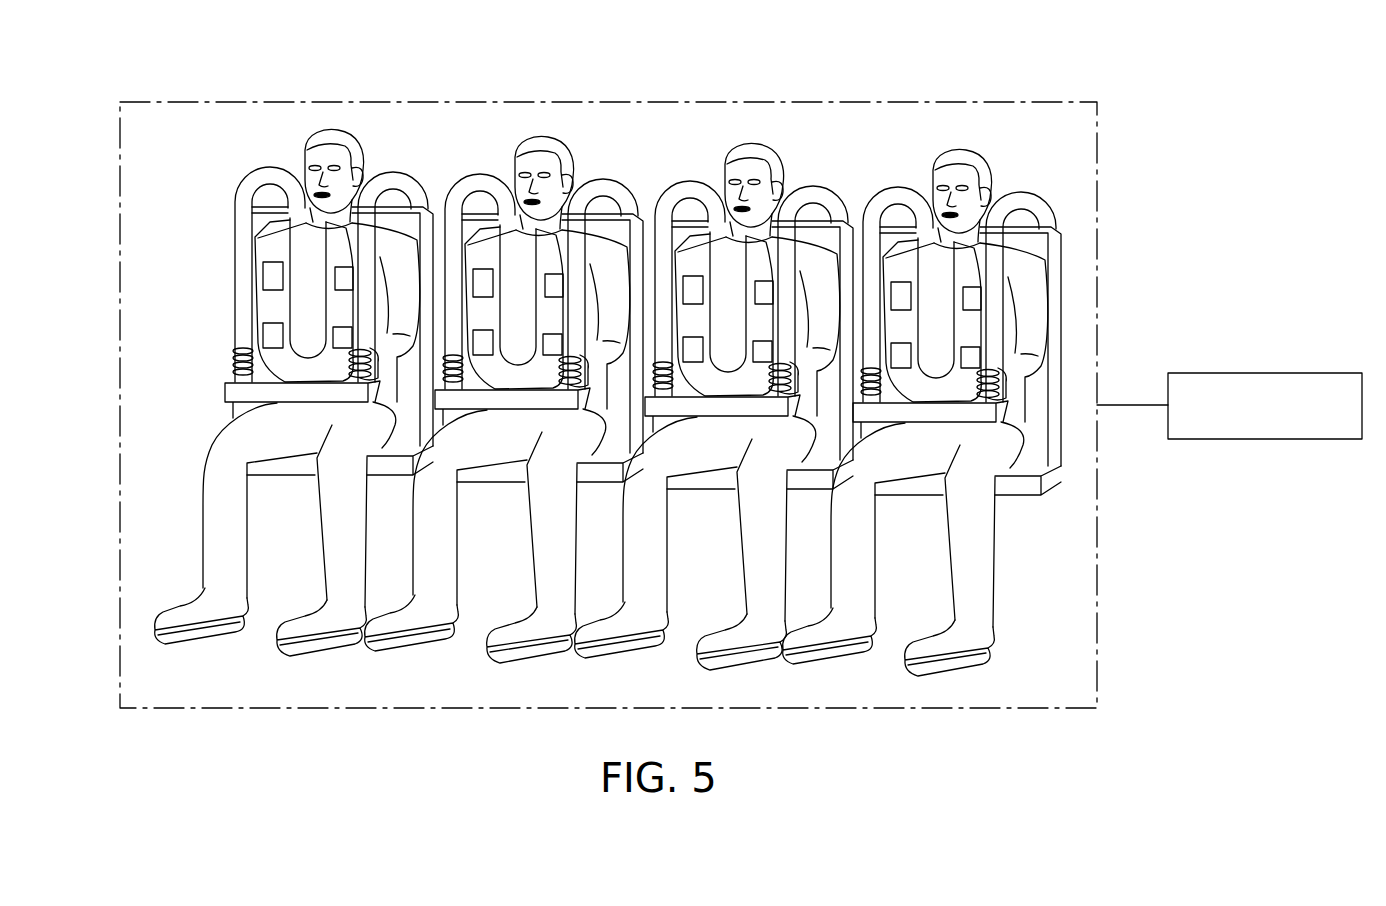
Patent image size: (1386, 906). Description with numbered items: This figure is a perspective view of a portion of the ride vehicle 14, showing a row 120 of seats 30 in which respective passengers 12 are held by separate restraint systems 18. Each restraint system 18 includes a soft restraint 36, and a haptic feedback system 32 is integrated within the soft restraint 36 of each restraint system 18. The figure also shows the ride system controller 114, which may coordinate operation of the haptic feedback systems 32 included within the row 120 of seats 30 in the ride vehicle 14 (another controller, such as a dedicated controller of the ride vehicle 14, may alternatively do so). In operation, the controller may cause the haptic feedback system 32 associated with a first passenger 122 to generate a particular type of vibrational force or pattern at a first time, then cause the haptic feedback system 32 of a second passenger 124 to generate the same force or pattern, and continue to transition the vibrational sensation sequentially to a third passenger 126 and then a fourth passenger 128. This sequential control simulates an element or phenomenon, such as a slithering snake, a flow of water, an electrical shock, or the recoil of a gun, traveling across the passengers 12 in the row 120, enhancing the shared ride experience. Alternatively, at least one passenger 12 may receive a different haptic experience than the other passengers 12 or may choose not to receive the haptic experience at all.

The passenger 12 is at (216, 517).
The ride vehicle 14 is at (1109, 333).
The restraint system 18 is at (238, 176).
The seat 30 is at (1040, 447).
The haptic feedback system 32 is at (272, 335).
The soft restraint 36 is at (430, 214).
The ride system controller 114 is at (1266, 372).
The row 120 is at (83, 370).
The first passenger 122 is at (298, 140).
The second passenger 124 is at (503, 145).
The third passenger 126 is at (706, 151).
The fourth passenger 128 is at (920, 160).